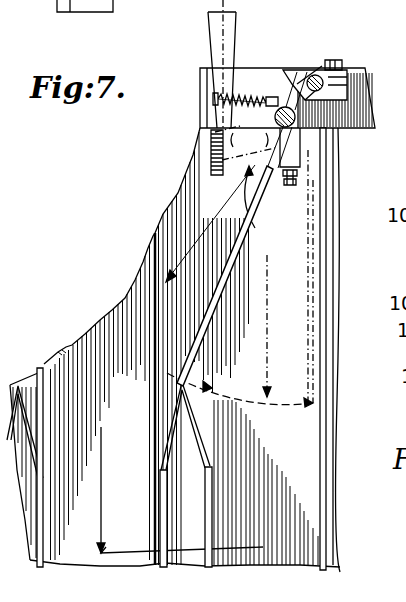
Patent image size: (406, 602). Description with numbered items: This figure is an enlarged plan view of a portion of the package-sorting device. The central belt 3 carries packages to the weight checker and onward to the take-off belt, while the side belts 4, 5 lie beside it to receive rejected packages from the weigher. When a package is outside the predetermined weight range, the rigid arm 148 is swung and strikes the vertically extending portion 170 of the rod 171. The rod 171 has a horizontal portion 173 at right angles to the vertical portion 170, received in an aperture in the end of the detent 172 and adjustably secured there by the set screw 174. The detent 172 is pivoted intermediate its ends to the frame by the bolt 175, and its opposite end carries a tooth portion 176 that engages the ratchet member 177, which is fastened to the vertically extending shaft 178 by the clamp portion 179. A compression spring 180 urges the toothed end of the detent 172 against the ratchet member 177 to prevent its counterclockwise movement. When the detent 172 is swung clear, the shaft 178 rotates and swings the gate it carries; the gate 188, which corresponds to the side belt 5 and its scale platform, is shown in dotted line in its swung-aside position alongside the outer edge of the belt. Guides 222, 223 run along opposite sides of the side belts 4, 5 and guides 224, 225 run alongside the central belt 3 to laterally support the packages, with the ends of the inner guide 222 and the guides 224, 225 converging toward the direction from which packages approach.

The central belt 3 is at (101, 321).
The side belt 4 is at (34, 373).
The side belt 5 is at (195, 185).
The rigid arm 148 is at (210, 18).
The vertically extending portion 170 is at (217, 177).
The rod 171 is at (255, 208).
The detent 172 is at (300, 142).
The horizontal portion 173 is at (252, 140).
The set screw 174 is at (303, 172).
The bolt 175 is at (302, 122).
The tooth portion 176 is at (286, 100).
The ratchet member 177 is at (338, 64).
The vertically extending shaft 178 is at (316, 75).
The clamp portion 179 is at (347, 92).
The compression spring 180 is at (246, 76).
The gate 188 is at (205, 254).
The guide 222 is at (205, 568).
The guide 223 is at (328, 566).
The guide 224 is at (40, 568).
The guide 225 is at (160, 548).